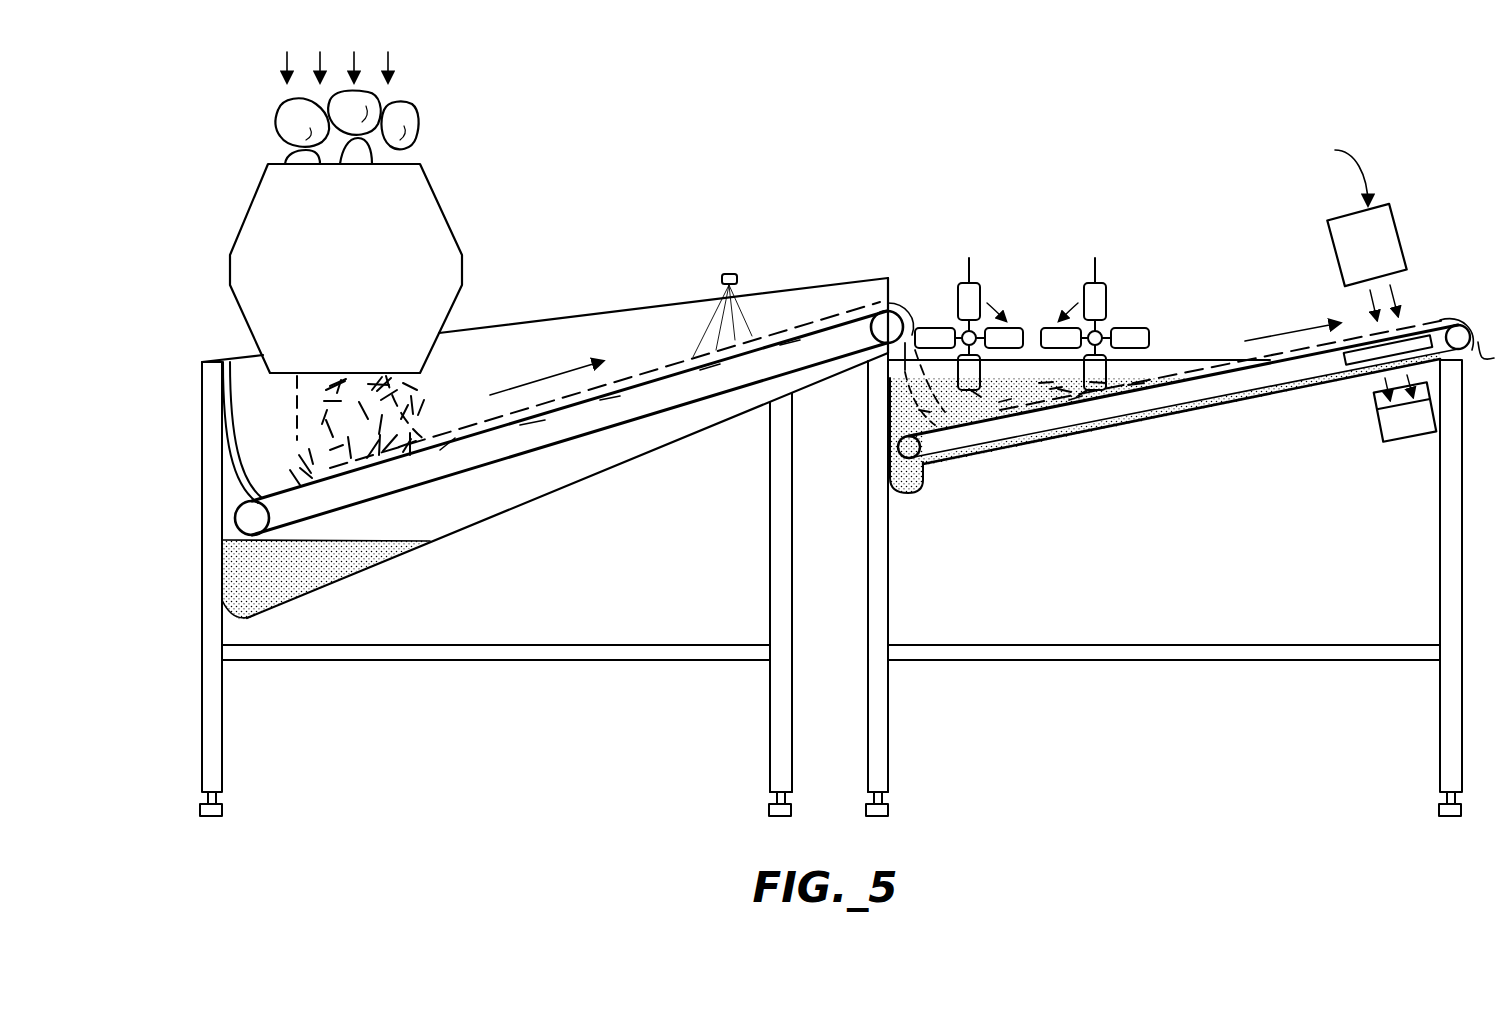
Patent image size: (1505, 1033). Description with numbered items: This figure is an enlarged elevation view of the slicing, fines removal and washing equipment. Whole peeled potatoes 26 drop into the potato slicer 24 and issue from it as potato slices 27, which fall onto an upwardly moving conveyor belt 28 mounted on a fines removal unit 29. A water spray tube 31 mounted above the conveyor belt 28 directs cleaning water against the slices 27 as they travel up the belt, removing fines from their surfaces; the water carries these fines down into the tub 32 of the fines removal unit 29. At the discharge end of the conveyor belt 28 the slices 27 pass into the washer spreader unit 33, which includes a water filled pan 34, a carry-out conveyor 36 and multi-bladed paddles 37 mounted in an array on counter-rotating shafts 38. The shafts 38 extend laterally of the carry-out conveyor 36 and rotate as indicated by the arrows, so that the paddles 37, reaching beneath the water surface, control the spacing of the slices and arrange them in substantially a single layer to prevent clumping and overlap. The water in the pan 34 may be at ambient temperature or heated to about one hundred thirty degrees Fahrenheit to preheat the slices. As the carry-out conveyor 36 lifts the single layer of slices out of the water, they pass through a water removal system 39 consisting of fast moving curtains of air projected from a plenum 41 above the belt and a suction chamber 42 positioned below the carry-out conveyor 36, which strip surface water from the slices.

The potato slicer 24 is at (447, 207).
The potatoes 26 is at (418, 104).
The potato slices 27 is at (415, 403).
The conveyor belt 28 is at (598, 400).
The fines removal unit 29 is at (202, 455).
The water spray tube 31 is at (728, 270).
The tub 32 is at (468, 530).
The washer spreader unit 33 is at (1192, 358).
The water filled pan 34 is at (1155, 421).
The carry-out conveyor 36 is at (1462, 325).
The multi-bladed paddles 37 is at (969, 283).
The counter-rotating shafts 38 is at (960, 326).
The water removal system 39 is at (1335, 171).
The plenum 41 is at (1398, 228).
The suction chamber 42 is at (1412, 335).